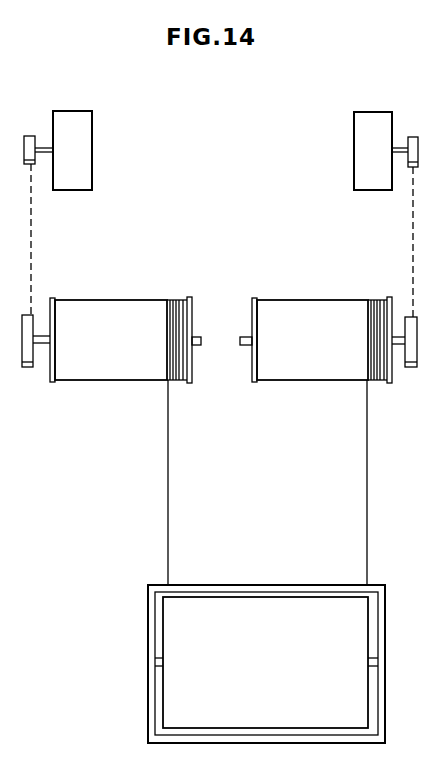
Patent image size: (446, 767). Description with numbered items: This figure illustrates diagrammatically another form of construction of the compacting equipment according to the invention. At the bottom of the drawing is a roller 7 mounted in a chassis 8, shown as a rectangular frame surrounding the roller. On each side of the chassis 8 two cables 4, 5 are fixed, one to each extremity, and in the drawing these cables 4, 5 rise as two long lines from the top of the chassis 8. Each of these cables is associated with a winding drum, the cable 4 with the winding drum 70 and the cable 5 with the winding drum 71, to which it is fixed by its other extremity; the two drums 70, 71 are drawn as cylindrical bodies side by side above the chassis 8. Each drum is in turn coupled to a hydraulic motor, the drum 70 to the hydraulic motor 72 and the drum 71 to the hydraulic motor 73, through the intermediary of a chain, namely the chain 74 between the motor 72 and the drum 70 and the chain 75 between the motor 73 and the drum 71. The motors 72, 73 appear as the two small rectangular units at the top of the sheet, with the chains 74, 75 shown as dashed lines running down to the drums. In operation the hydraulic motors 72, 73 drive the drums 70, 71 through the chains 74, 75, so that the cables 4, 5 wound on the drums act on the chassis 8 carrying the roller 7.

The roller 7 is at (270, 670).
The chassis 8 is at (385, 603).
The cable 4 is at (174, 482).
The cable 5 is at (373, 482).
The winding drum 70 is at (120, 346).
The winding drum 71 is at (320, 346).
The hydraulic motor 72 is at (83, 156).
The hydraulic motor 73 is at (384, 156).
The chain 74 is at (42, 239).
The chain 75 is at (424, 242).